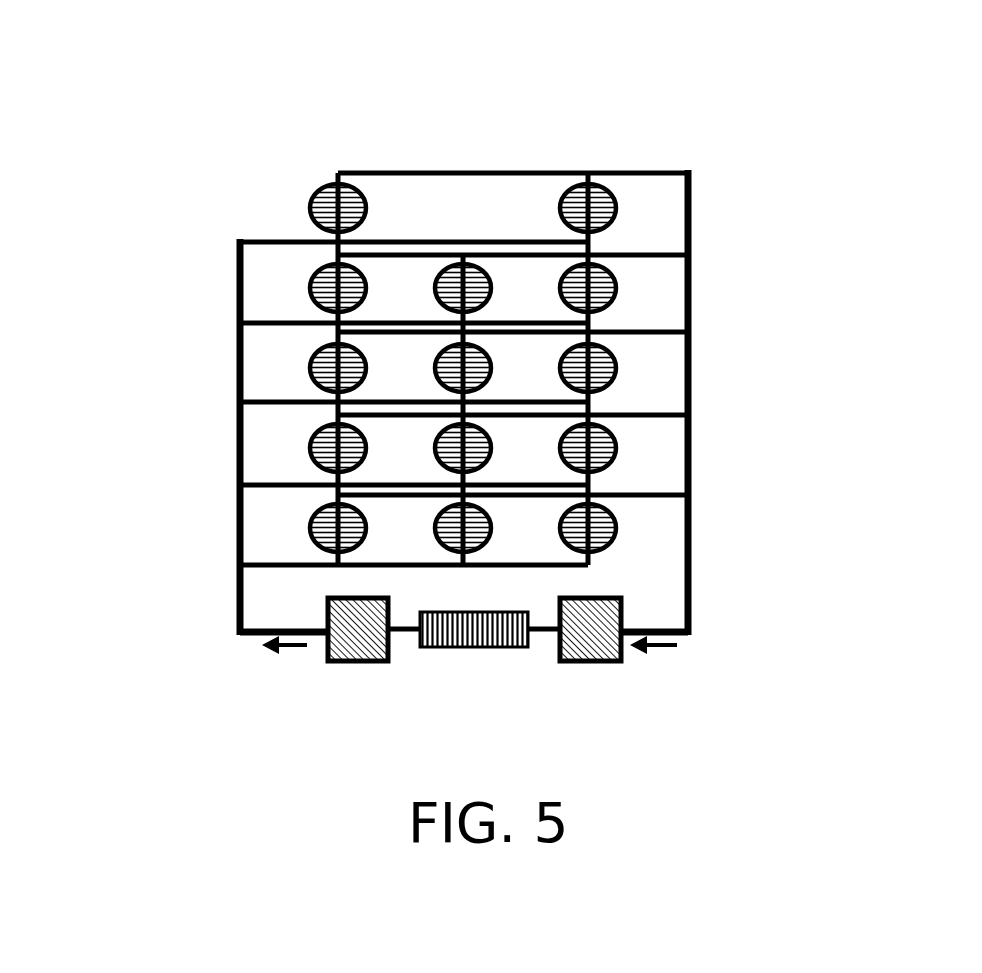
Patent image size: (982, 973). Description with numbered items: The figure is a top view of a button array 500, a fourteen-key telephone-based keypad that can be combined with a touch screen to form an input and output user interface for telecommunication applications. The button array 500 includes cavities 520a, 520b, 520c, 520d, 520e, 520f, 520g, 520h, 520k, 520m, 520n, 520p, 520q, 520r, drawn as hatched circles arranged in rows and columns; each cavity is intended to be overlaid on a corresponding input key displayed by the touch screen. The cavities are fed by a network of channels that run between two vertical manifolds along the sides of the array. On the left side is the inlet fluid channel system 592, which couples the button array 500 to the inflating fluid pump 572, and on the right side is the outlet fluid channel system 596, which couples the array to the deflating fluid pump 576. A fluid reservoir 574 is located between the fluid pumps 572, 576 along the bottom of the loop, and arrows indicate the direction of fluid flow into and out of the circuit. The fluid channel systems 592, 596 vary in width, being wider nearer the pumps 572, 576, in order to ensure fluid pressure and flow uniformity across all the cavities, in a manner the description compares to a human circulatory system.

The button array 500 is at (203, 116).
The inlet fluid channel system 592 is at (240, 240).
The outlet fluid channel system 596 is at (688, 170).
The cavity 520a is at (318, 188).
The cavity 520b is at (310, 288).
The cavity 520c is at (310, 368).
The cavity 520d is at (310, 448).
The cavity 520e is at (310, 528).
The cavity 520f is at (443, 263).
The cavity 520g is at (437, 358).
The cavity 520h is at (437, 438).
The cavity 520k is at (437, 518).
The cavity 520m is at (616, 208).
The cavity 520n is at (616, 288).
The cavity 520p is at (616, 368).
The cavity 520q is at (616, 448).
The cavity 520r is at (616, 528).
The inflating fluid pump 572 is at (358, 662).
The fluid reservoir 574 is at (474, 648).
The deflating fluid pump 576 is at (590, 662).